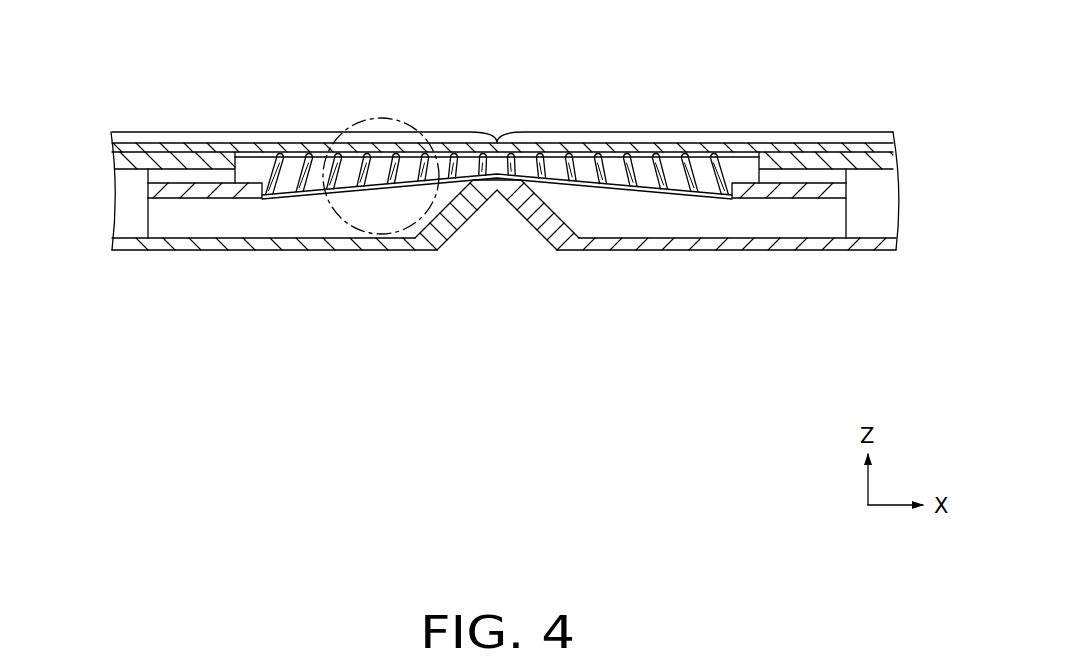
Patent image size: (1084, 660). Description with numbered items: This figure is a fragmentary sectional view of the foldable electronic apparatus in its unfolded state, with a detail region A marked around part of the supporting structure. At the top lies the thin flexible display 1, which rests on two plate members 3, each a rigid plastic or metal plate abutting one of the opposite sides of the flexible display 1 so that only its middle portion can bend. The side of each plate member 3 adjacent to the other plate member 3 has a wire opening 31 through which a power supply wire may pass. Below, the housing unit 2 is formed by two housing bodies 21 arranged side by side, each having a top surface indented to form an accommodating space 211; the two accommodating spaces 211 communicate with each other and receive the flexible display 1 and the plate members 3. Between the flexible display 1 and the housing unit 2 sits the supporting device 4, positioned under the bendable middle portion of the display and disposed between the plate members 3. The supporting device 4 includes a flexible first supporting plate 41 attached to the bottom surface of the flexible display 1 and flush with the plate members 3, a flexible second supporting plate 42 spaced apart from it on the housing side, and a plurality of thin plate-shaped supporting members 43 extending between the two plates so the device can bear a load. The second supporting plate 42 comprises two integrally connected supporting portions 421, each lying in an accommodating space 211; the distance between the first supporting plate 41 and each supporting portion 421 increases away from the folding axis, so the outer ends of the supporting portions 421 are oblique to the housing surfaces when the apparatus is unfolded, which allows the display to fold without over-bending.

The flexible display 1 is at (888, 149).
The housing unit 2 is at (538, 253).
The housing body 21 is at (262, 251).
The accommodating space 211 is at (184, 231).
The plate member 3 is at (117, 158).
The wire opening 31 is at (167, 177).
The supporting device 4 is at (497, 197).
The first supporting plate 41 is at (496, 160).
The second supporting plate 42 is at (450, 184).
The supporting portion 421 is at (358, 202).
The supporting member 43 is at (364, 182).
The detail region A is at (381, 162).